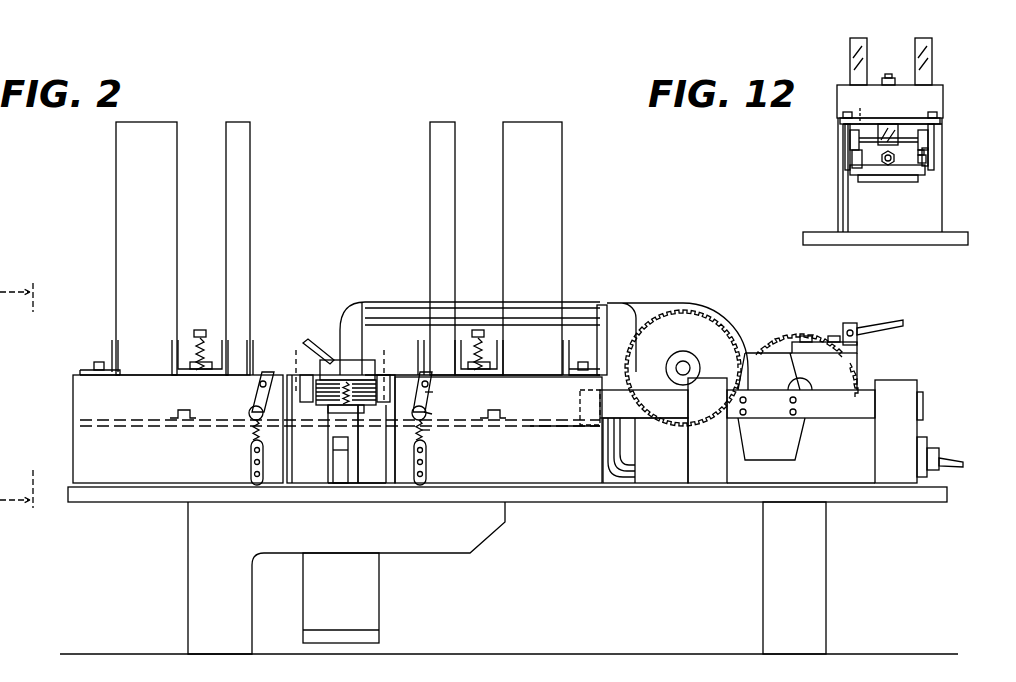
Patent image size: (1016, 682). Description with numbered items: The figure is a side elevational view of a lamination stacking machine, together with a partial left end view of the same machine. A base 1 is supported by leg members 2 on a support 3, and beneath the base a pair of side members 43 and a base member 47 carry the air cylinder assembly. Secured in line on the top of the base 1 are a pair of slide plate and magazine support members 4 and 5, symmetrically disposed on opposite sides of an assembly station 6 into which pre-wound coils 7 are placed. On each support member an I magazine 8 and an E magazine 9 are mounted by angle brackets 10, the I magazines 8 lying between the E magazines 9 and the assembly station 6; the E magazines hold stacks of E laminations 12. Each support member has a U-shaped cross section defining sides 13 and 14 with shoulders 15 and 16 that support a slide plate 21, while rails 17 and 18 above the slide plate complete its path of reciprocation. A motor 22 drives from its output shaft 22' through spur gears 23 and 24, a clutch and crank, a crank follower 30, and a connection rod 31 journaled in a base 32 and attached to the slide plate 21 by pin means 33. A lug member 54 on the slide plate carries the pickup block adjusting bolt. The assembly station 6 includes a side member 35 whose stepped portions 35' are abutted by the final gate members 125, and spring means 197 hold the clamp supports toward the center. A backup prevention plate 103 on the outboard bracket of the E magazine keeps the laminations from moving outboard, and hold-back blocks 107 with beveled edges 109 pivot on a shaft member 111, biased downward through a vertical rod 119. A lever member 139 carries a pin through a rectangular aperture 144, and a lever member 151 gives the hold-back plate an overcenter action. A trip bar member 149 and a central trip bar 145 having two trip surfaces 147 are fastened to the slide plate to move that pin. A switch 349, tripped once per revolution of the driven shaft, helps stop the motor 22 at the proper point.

In FIG. 2, the base 1 is at (125, 500).
In FIG. 12, the base 1 is at (973, 241).
In FIG. 2, the leg members 2 is at (216, 593).
In FIG. 2, the support 3 is at (534, 654).
In FIG. 2, the slide plate and magazine support member 4 is at (176, 460).
In FIG. 12, the slide plate and magazine support member 4 is at (963, 209).
In FIG. 2, the slide plate and magazine support member 5 is at (511, 468).
In FIG. 2, the assembly station 6 is at (307, 469).
In FIG. 2, the pre-wound coil 7 is at (332, 358).
In FIG. 2, the I magazine 8 is at (243, 173).
In FIG. 2, the E magazine 9 is at (145, 173).
In FIG. 12, the E magazine 9 is at (850, 48).
In FIG. 2, the angle bracket 10 is at (112, 346).
In FIG. 12, the angle bracket 10 is at (938, 96).
In FIG. 2, the E lamination 12 is at (28, 397).
In FIG. 12, the side 13 is at (940, 120).
In FIG. 12, the side 14 is at (845, 128).
In FIG. 12, the shoulder 15 is at (931, 171).
In FIG. 12, the shoulder 16 is at (880, 185).
In FIG. 12, the rail or plate member 17 is at (926, 160).
In FIG. 12, the rail or plate member 18 is at (852, 158).
In FIG. 2, the slide plate 21 is at (540, 426).
In FIG. 12, the slide plate 21 is at (872, 175).
In FIG. 2, the motor 22 is at (473, 328).
In FIG. 2, the output shaft 22' is at (693, 357).
In FIG. 2, the spur gear 23 is at (678, 343).
In FIG. 2, the spur gear 24 is at (862, 372).
In FIG. 2, the crank follower 30 is at (773, 453).
In FIG. 2, the connection rod 31 is at (652, 418).
In FIG. 2, the base 32 is at (816, 480).
In FIG. 2, the pin means 33 is at (578, 394).
In FIG. 2, the side member 35 is at (357, 503).
In FIG. 2, the stepped portion 35' is at (341, 412).
In FIG. 2, the side member 43 is at (380, 597).
In FIG. 2, the base member 47 is at (380, 634).
In FIG. 12, the lug member 54 is at (900, 168).
In FIG. 12, the backup prevention plate 103 is at (890, 122).
In FIG. 12, the hold-back block 107 is at (850, 138).
In FIG. 12, the beveled edge 109 is at (928, 142).
In FIG. 12, the shaft member 111 is at (866, 107).
In FIG. 12, the vertical rod 119 is at (886, 73).
In FIG. 2, the final gate member 125 is at (303, 350).
In FIG. 2, the lever member 139 is at (430, 392).
In FIG. 2, the rectangular aperture 144 is at (434, 414).
In FIG. 2, the central trip bar 145 is at (366, 444).
In FIG. 2, the trip surface 147 is at (286, 375).
In FIG. 2, the trip bar member 149 is at (180, 408).
In FIG. 12, the trip bar member 149 is at (924, 162).
In FIG. 2, the lever member 151 is at (428, 428).
In FIG. 2, the spring means 197 is at (333, 468).
In FIG. 2, the switch 349 is at (938, 435).